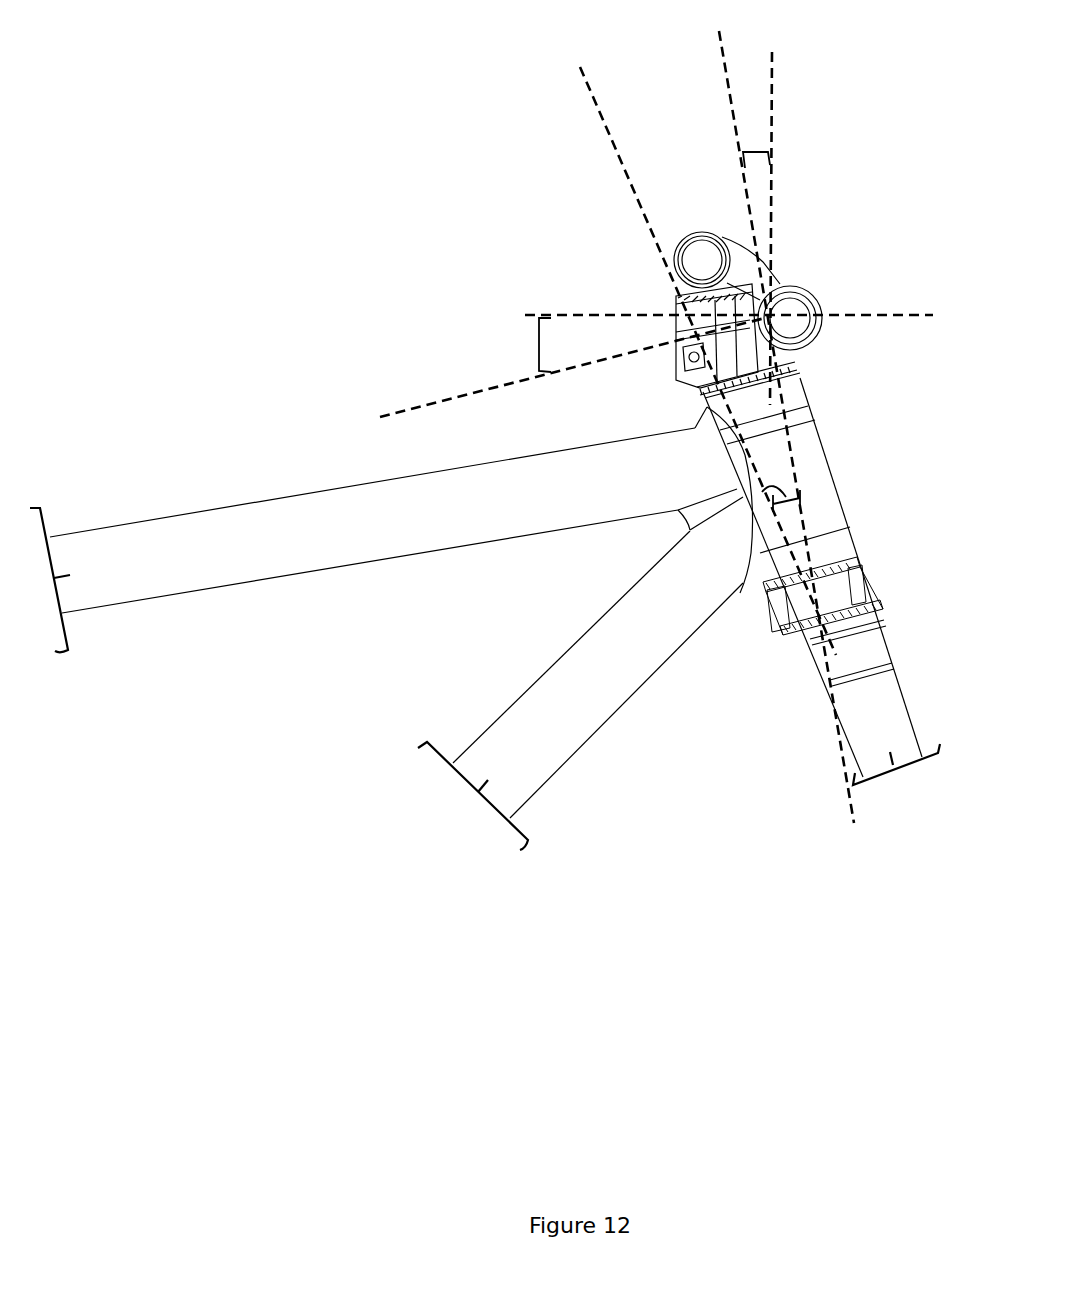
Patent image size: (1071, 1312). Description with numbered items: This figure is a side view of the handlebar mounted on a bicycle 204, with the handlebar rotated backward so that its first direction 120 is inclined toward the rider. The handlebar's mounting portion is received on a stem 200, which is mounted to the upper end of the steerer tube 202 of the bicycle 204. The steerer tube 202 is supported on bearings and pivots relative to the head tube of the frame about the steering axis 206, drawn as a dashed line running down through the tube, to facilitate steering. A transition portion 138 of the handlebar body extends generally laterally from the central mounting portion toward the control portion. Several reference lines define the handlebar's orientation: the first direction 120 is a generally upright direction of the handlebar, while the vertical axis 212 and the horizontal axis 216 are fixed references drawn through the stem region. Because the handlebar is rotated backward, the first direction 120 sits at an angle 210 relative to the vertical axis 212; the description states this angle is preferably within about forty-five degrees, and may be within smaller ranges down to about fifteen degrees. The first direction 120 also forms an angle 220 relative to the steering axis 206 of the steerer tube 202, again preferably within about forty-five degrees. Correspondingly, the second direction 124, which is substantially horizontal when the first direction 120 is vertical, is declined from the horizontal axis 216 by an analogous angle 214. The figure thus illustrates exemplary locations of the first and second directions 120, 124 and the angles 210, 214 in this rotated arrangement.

The first direction 120 is at (727, 75).
The second direction 124 is at (437, 403).
The transition portion 138 is at (780, 307).
The stem 200 is at (655, 277).
The steerer tube 202 is at (860, 577).
The bicycle 204 is at (228, 532).
The steering axis 206 is at (603, 118).
The angle 210 is at (752, 150).
The vertical axis 212 is at (773, 82).
The angle 214 is at (537, 342).
The horizontal axis 216 is at (860, 318).
The angle 220 is at (763, 492).